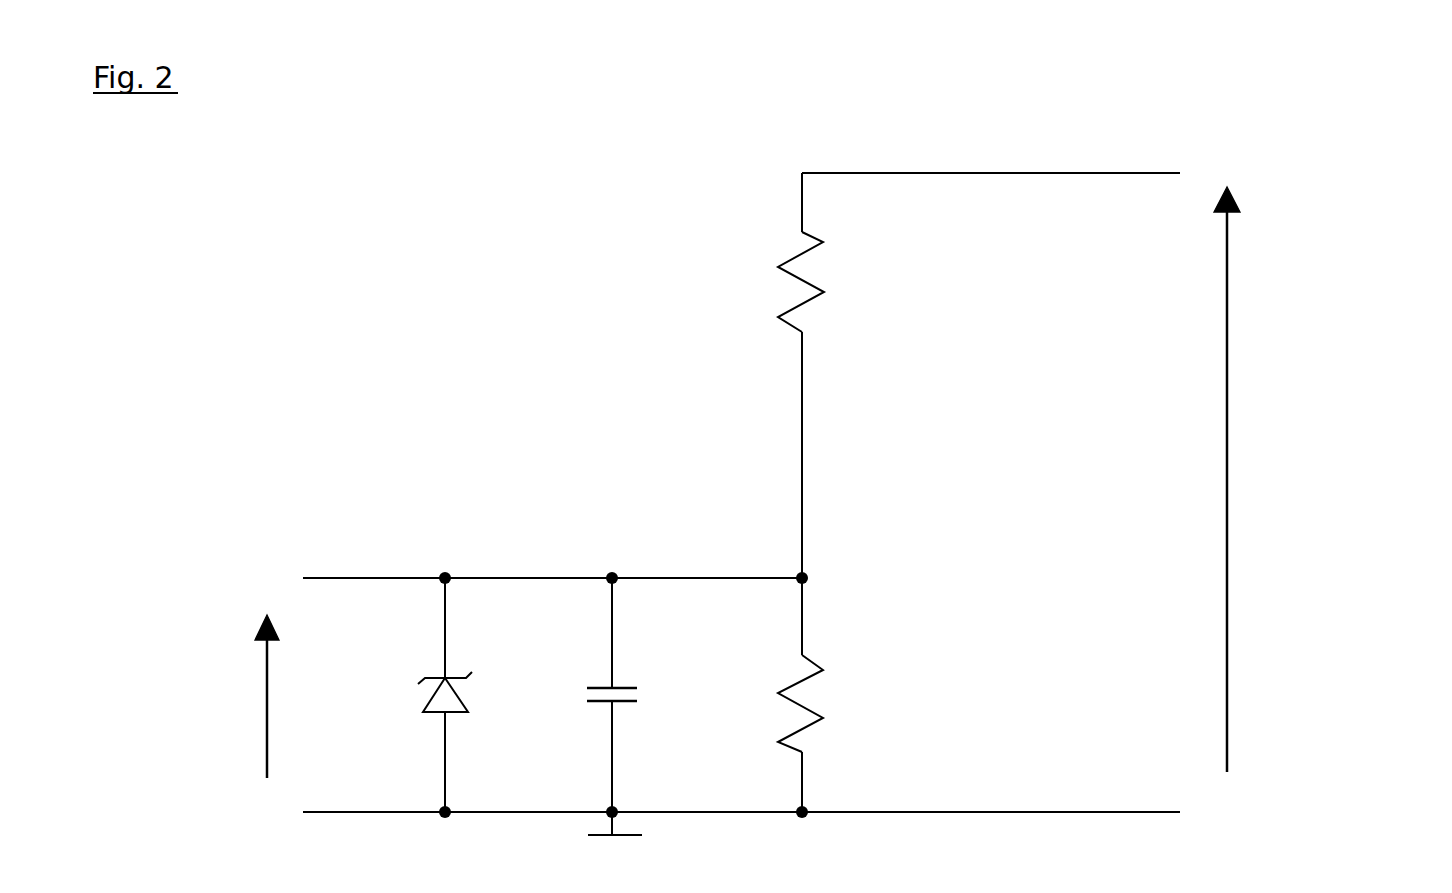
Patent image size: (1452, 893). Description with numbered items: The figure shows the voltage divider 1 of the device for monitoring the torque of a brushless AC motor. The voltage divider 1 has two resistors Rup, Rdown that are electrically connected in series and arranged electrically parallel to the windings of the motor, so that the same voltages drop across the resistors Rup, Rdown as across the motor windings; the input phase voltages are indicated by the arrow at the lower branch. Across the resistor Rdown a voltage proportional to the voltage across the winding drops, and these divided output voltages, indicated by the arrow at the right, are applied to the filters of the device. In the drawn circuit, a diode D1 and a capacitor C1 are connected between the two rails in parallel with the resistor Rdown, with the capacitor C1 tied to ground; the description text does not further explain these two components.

The voltage divider 1 is at (518, 270).
The resistor Rup is at (761, 282).
The resistor Rdown is at (855, 708).
The zener diode D1 is at (431, 695).
The capacitor C1 is at (626, 695).